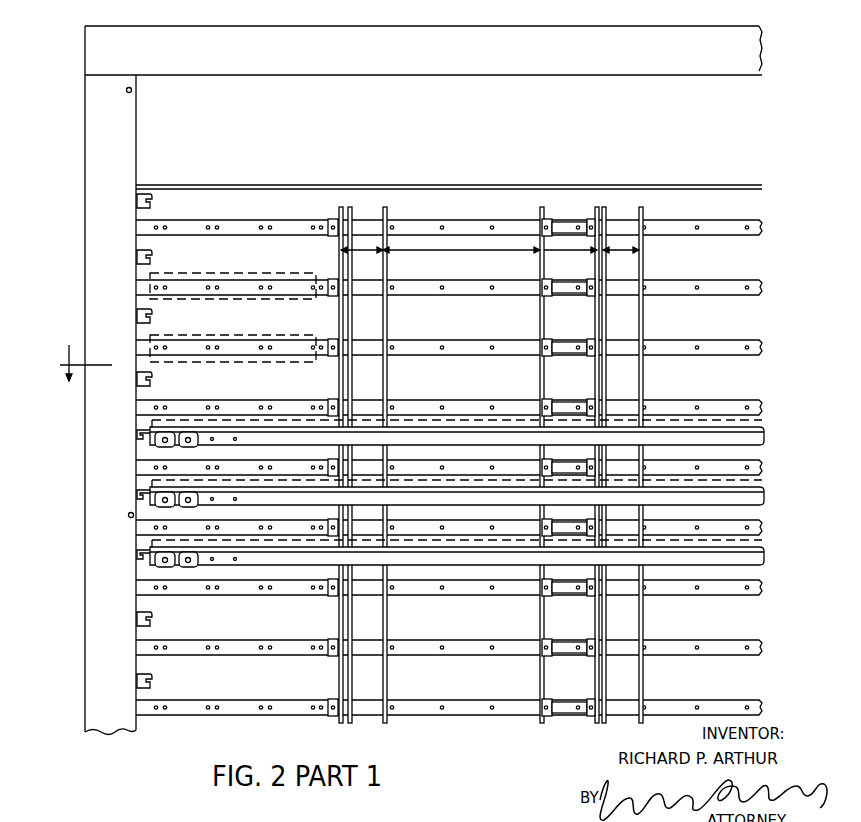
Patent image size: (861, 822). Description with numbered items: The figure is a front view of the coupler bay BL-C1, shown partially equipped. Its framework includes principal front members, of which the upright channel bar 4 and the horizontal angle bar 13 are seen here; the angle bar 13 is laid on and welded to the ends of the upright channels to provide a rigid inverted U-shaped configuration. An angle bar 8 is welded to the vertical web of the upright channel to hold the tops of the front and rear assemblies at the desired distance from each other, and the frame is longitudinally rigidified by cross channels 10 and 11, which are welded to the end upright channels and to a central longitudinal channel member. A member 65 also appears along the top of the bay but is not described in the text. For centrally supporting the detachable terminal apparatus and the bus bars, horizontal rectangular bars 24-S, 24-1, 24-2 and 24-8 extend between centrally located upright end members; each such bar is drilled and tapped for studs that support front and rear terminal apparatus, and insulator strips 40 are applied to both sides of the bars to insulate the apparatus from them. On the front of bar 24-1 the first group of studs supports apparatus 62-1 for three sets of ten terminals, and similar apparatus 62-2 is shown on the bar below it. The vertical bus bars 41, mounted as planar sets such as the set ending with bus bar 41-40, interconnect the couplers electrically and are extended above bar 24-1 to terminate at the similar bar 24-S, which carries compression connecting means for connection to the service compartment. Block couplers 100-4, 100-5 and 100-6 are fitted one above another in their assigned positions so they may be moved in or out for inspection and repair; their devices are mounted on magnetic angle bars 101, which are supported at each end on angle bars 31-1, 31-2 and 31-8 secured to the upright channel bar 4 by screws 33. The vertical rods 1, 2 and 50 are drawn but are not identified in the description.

The coupler bay BL-C1 is at (361, 25).
The horizontal angle bar 13 is at (688, 70).
The upright channel bar 4 is at (85, 264).
The cross channel 11 is at (81, 360).
The guide rail 65 is at (722, 185).
The insulator strip 40 is at (475, 294).
The screws 33 is at (449, 275).
The apparatus 62-1 is at (266, 300).
The spring assembly 62-2 is at (260, 363).
The rod 1 is at (339, 266).
The rod 2 is at (352, 262).
The cross channel 10 is at (387, 262).
The rod 50 is at (642, 263).
The vertical bus bars 41 is at (339, 251).
The bus bar 41-40 is at (540, 261).
The horizontal rectangular bar 24-S is at (573, 214).
The horizontal rectangular bar 24-1 is at (575, 295).
The horizontal rectangular bar 24-2 is at (577, 356).
The horizontal rectangular bar 24-8 is at (576, 715).
The block coupler 100-4 is at (476, 429).
The magnetic angle bar 101 is at (765, 438).
The block coupler 100-5 is at (764, 480).
The block coupler 100-6 is at (764, 540).
The angle bar 8 is at (147, 197).
The angle bar 31-1 is at (148, 254).
The angle bar 31-2 is at (151, 317).
The angle bar 31-8 is at (151, 676).